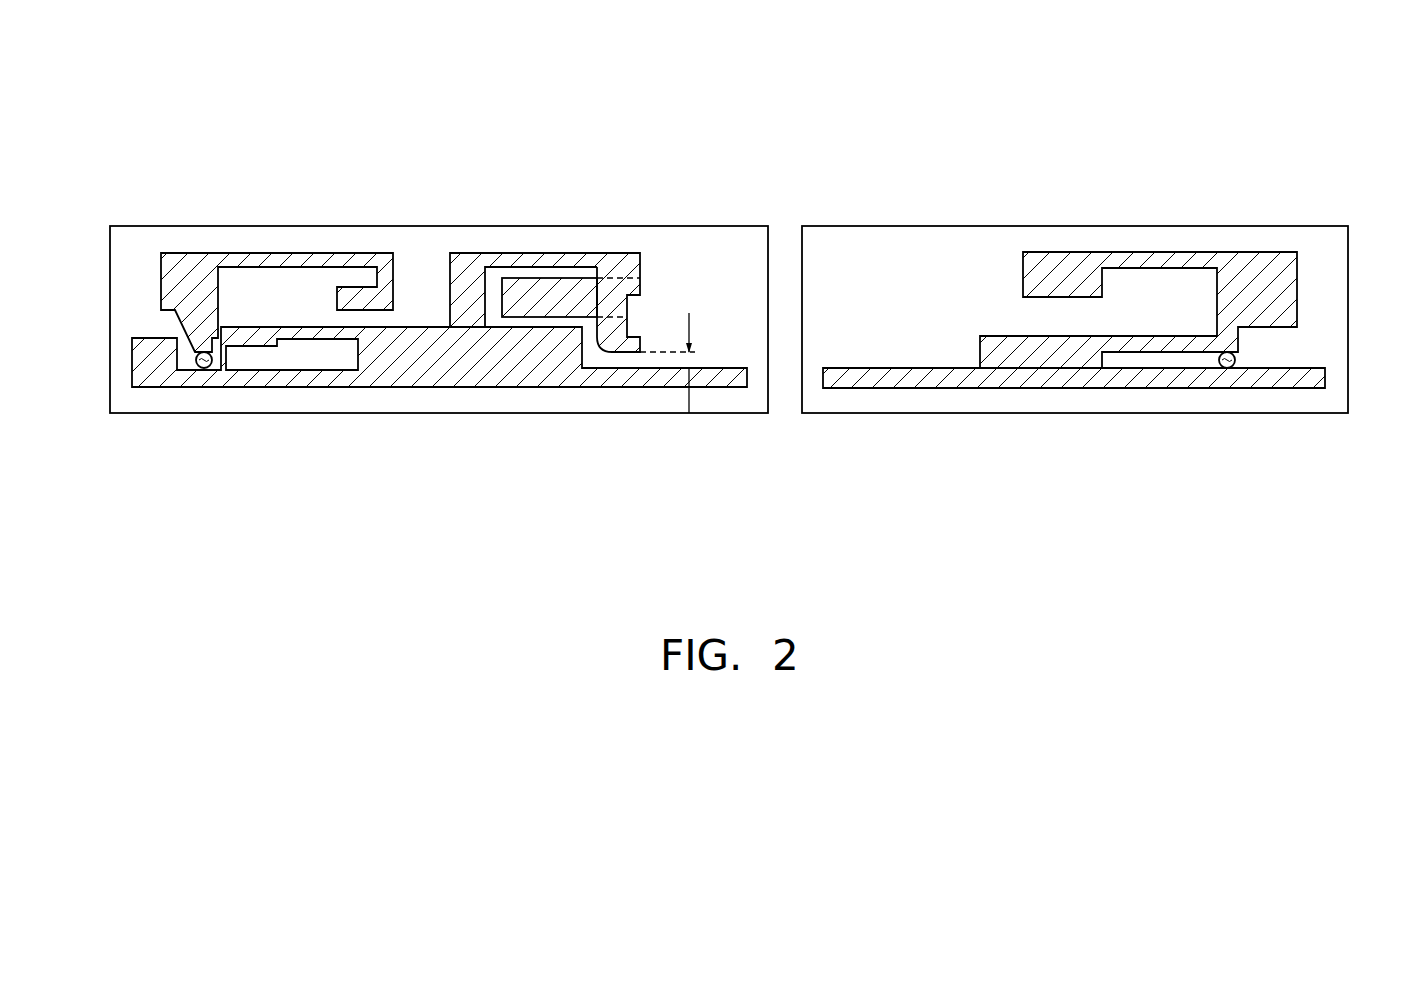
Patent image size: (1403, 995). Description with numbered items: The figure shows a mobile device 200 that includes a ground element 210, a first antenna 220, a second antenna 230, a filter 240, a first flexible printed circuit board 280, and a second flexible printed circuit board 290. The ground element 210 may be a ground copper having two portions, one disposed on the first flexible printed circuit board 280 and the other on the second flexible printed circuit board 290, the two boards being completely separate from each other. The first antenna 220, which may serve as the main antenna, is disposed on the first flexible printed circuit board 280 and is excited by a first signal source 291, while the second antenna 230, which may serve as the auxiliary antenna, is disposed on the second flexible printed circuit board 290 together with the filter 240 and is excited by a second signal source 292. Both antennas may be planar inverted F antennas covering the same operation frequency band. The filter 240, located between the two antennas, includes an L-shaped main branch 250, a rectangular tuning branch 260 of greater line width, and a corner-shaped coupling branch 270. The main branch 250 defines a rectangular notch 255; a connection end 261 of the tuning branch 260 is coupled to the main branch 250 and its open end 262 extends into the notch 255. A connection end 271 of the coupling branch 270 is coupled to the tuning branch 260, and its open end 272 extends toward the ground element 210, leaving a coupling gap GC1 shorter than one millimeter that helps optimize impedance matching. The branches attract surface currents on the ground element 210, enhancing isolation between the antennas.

The mobile device 200 is at (137, 86).
The ground element 210 is at (390, 353).
The first antenna 220 is at (1135, 254).
The second antenna 230 is at (270, 254).
The filter 240 is at (645, 488).
The main branch 250 is at (468, 297).
The notch 255 is at (495, 293).
The tuning branch 260 is at (542, 297).
The connection end of the tuning branch 261 is at (624, 282).
The open end of the tuning branch 262 is at (526, 277).
The coupling branch 270 is at (614, 330).
The connection end of the coupling branch 271 is at (632, 287).
The open end of the coupling branch 272 is at (630, 368).
The first flexible printed circuit board 280 is at (818, 413).
The second flexible printed circuit board 290 is at (124, 413).
The first signal source 291 is at (1236, 362).
The second signal source 292 is at (213, 362).
The coupling gap GC1 is at (698, 363).